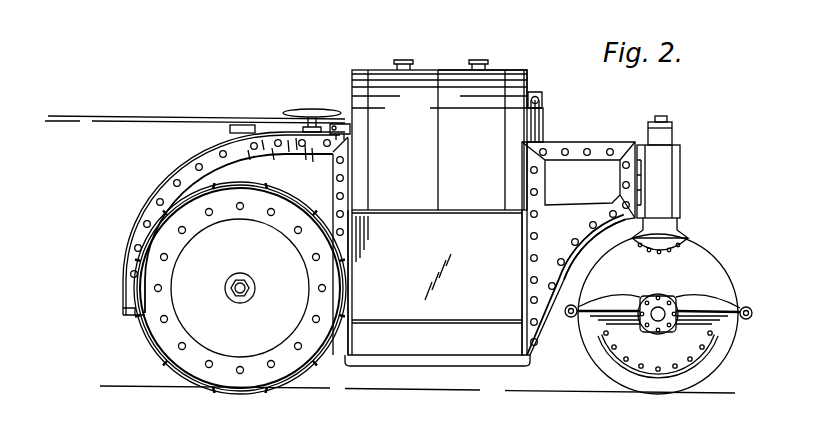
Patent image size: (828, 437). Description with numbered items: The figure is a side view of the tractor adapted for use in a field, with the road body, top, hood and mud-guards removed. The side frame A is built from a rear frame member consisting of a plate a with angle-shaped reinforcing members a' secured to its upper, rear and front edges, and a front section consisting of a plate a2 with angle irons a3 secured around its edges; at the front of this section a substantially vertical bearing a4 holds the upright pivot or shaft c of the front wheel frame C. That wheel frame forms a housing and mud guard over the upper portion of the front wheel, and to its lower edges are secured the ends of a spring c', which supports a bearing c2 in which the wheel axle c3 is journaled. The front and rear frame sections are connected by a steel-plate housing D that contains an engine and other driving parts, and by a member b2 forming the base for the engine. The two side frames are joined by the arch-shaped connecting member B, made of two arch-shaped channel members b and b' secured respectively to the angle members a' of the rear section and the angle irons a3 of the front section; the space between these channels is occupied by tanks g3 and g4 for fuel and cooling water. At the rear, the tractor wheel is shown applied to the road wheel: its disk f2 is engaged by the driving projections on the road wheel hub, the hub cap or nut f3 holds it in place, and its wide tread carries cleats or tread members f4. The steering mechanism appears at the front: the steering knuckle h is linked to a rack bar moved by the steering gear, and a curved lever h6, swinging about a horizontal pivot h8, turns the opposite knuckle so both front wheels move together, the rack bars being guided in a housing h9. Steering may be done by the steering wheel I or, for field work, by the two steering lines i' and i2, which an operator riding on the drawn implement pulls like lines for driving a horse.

The steering line i' is at (196, 104).
The steering line i2 is at (171, 120).
The guide housing h9 is at (242, 125).
The steering wheel I is at (291, 109).
The arch-shaped connecting member B is at (339, 107).
The arch-shaped channel member b is at (439, 124).
The arch-shaped channel member b' is at (484, 73).
The pivot h8 is at (540, 110).
The curved lever h6 is at (543, 121).
The side frame A is at (578, 233).
The front section plate a2 is at (582, 205).
The angle irons a3 is at (590, 190).
The vertical bearing a4 is at (681, 178).
The rear frame plate a is at (234, 223).
The angle-shaped reinforcing members a' is at (326, 246).
The tank g3 is at (403, 126).
The tank g4 is at (471, 126).
The housing D is at (435, 282).
The base member b2 is at (453, 365).
The front roller F' is at (240, 299).
The disk f2 is at (240, 288).
The hub cap or nut f3 is at (230, 290).
The cleats or tread members f4 is at (313, 373).
The front wheel frame C is at (660, 314).
The upright pivot or shaft c is at (675, 110).
The steering knuckle h is at (673, 134).
The spring c' is at (667, 314).
The bearing c2 is at (645, 318).
The axle c3 is at (652, 331).